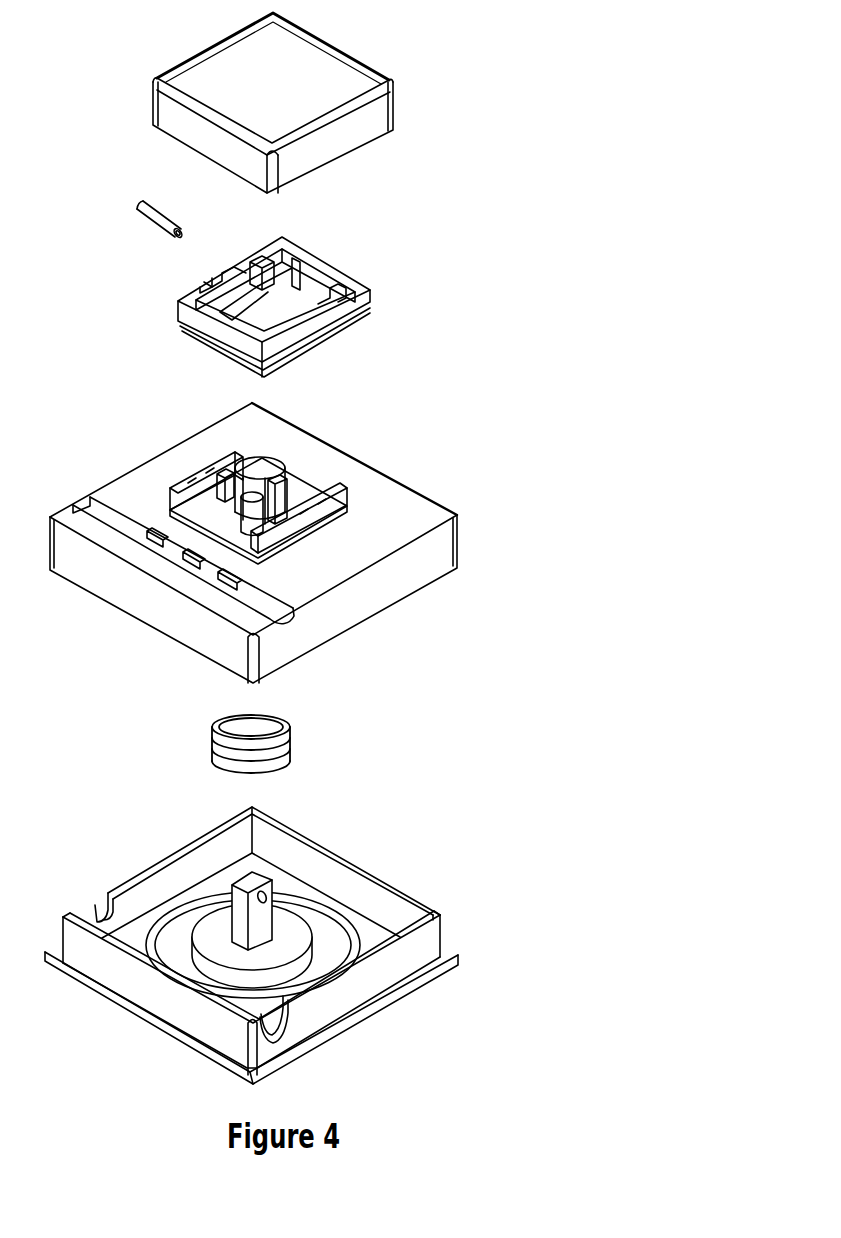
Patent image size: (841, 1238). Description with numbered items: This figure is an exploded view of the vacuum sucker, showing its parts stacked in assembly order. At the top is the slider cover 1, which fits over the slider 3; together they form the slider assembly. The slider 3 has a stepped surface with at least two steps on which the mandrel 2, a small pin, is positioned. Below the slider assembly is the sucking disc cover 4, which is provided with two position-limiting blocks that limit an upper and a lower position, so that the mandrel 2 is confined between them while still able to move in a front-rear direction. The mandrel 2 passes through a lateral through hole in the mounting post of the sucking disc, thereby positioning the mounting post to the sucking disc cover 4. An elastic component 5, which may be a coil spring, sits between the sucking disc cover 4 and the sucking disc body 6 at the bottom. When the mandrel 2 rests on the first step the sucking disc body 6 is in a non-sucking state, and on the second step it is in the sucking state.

The slider cover 1 is at (396, 58).
The mandrel 2 is at (210, 231).
The slider 3 is at (378, 321).
The sucking disc cover 4 is at (432, 478).
The elastic component 5 is at (327, 745).
The sucking disc body 6 is at (418, 873).